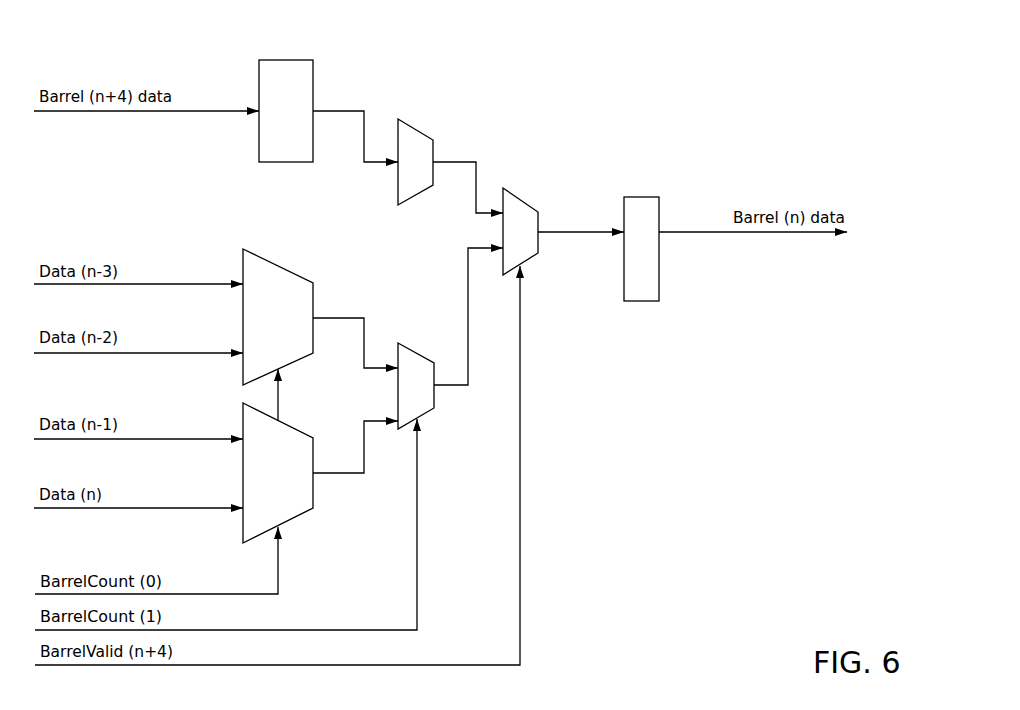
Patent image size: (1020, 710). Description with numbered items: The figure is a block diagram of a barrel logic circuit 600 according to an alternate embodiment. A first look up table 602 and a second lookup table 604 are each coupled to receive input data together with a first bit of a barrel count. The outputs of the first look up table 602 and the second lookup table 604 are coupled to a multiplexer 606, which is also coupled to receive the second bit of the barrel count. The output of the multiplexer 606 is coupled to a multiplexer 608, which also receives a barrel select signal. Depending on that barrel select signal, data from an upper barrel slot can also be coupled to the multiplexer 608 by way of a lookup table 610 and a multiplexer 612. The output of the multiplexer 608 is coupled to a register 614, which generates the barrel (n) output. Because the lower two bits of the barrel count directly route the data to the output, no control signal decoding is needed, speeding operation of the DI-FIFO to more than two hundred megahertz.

The barrel logic circuit 600 is at (662, 535).
The first look up table 602 is at (277, 267).
The second lookup table 604 is at (297, 430).
The multiplexer 606 is at (418, 353).
The multiplexer 608 is at (525, 200).
The lookup table 610 is at (313, 93).
The multiplexer 612 is at (422, 130).
The register 614 is at (660, 213).